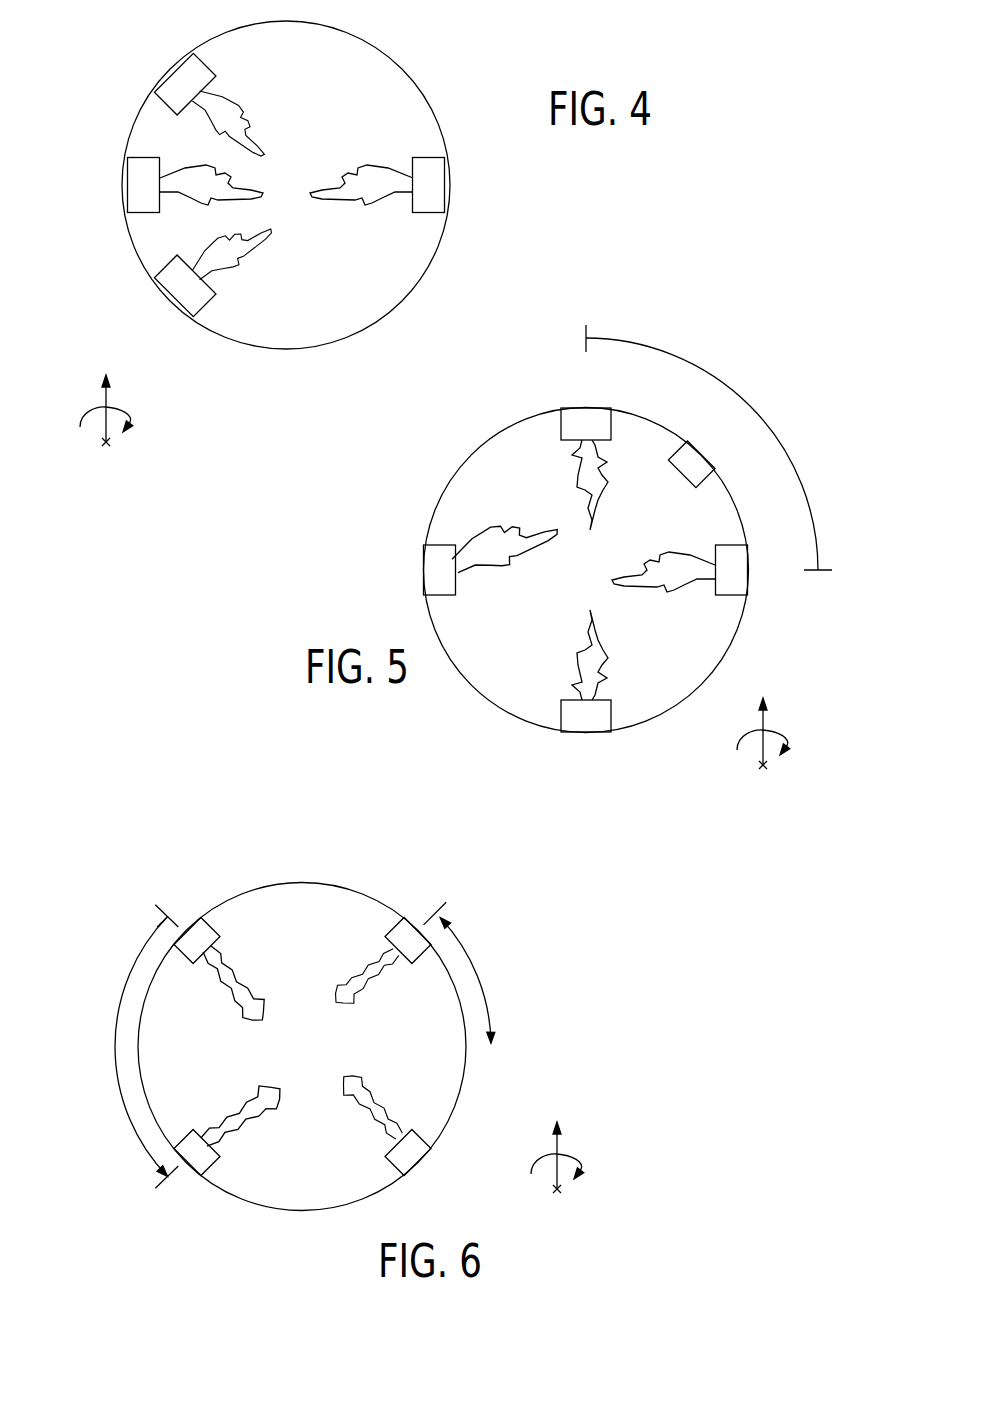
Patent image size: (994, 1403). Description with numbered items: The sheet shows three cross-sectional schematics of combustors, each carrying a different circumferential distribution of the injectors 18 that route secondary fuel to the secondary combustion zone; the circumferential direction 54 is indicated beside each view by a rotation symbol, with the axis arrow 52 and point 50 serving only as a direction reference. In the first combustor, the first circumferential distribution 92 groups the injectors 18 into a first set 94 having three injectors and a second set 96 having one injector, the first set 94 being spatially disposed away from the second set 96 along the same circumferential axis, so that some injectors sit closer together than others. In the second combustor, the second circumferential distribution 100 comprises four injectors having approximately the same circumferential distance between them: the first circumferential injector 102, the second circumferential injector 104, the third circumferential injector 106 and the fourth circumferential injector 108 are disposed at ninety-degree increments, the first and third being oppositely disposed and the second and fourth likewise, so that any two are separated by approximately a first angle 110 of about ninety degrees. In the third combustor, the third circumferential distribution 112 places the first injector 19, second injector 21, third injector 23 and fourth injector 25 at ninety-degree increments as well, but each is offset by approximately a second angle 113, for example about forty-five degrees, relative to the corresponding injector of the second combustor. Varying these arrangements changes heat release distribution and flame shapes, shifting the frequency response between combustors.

In FIG. 4, the injector 18 is at (177, 90).
In FIG. 5, the injector 18 is at (566, 380).
In FIG. 6, the first injector 19 is at (407, 935).
In FIG. 6, the second injector 21 is at (203, 932).
In FIG. 6, the third injector 23 is at (200, 1157).
In FIG. 6, the fourth injector 25 is at (410, 1150).
In FIG. 4, the reference point 50 is at (98, 471).
In FIG. 5, the reference point 50 is at (755, 794).
In FIG. 6, the reference point 50 is at (549, 1218).
In FIG. 4, the axial direction 52 is at (82, 408).
In FIG. 5, the axial direction 52 is at (739, 731).
In FIG. 6, the axial direction 52 is at (533, 1155).
In FIG. 4, the circumferential direction 54 is at (123, 413).
In FIG. 5, the circumferential direction 54 is at (780, 736).
In FIG. 6, the circumferential direction 54 is at (574, 1160).
In FIG. 4, the first circumferential distribution 92 is at (109, 75).
In FIG. 4, the first set 94 is at (90, 217).
In FIG. 4, the second set 96 is at (483, 142).
In FIG. 5, the second circumferential distribution 100 is at (748, 348).
In FIG. 5, the first circumferential injector 102 is at (694, 463).
In FIG. 5, the second circumferential injector 104 is at (593, 407).
In FIG. 5, the third circumferential injector 106 is at (423, 560).
In FIG. 5, the fourth circumferential injector 108 is at (575, 727).
In FIG. 5, the first angle 110 is at (787, 455).
In FIG. 6, the first angle 110 is at (132, 980).
In FIG. 6, the third circumferential distribution 112 is at (108, 891).
In FIG. 6, the second angle 113 is at (480, 974).